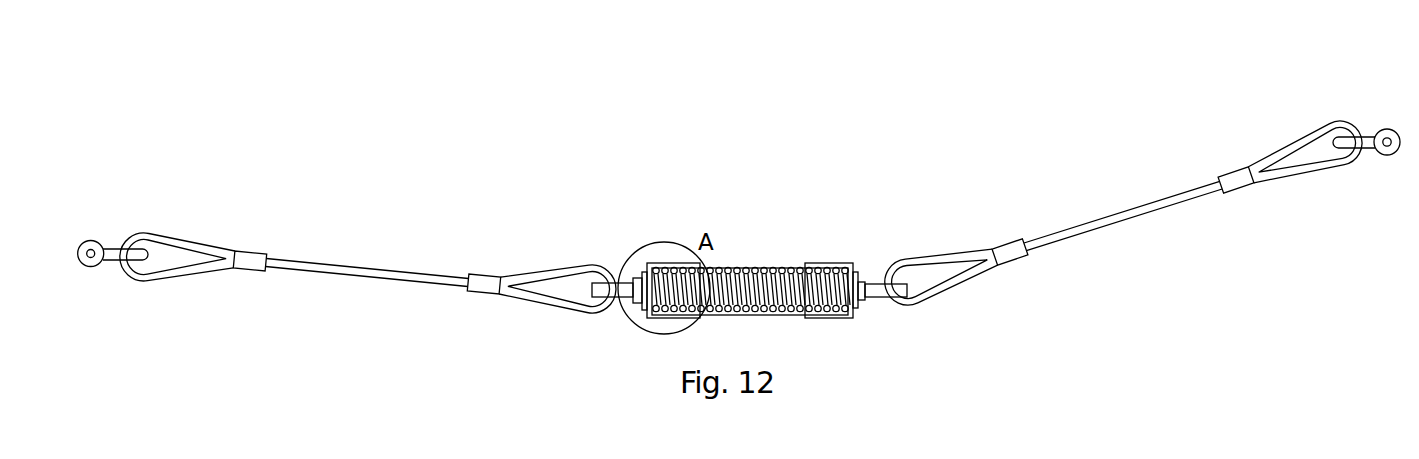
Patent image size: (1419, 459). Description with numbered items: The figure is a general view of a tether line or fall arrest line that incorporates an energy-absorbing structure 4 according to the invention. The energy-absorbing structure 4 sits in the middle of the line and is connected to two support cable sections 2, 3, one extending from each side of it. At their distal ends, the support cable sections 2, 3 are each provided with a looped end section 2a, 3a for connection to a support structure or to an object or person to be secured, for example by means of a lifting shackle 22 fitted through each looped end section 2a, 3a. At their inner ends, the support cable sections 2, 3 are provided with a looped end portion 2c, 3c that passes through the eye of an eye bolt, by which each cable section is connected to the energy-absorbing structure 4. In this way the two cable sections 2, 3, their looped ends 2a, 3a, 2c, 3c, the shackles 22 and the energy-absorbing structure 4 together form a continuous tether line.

The support cable section 2 is at (1128, 205).
The looped end section 2a is at (1285, 147).
The looped end portion 2c is at (937, 250).
The support cable section 3 is at (345, 263).
The looped end section 3a is at (175, 225).
The looped end portion 3c is at (557, 257).
The energy-absorbing structure 4 is at (762, 255).
The lifting shackle 22 is at (105, 231).